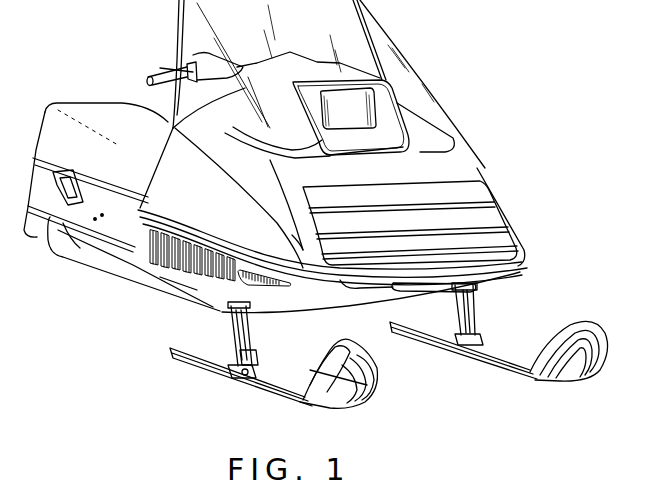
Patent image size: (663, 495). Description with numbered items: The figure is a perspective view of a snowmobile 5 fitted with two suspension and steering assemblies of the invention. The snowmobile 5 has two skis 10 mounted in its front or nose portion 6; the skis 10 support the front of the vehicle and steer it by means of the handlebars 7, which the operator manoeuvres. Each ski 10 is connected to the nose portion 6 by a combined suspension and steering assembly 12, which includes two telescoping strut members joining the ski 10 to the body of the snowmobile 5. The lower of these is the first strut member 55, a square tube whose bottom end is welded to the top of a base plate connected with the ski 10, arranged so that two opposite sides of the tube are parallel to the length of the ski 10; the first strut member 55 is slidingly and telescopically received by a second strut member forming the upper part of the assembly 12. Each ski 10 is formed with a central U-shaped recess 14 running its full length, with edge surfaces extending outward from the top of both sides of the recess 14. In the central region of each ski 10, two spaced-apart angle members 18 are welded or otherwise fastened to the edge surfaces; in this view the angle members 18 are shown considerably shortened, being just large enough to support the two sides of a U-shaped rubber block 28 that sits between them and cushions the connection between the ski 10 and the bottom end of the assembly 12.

The snowmobile 5 is at (468, 156).
The nose portion 6 is at (333, 300).
The handlebars 7 is at (150, 69).
The ski 10 is at (357, 387).
The combined suspension and steering assembly 12 is at (247, 332).
The central U-shaped recess 14 is at (197, 347).
The angle member 18 is at (228, 375).
The U-shaped rubber block 28 is at (246, 378).
The first strut member 55 is at (248, 353).